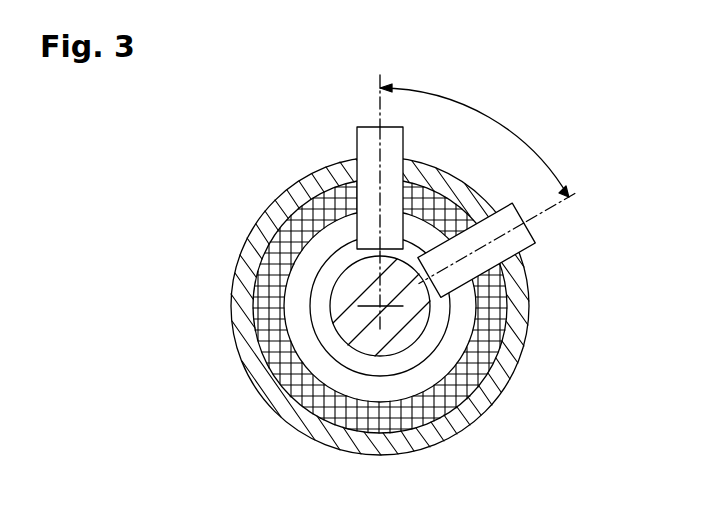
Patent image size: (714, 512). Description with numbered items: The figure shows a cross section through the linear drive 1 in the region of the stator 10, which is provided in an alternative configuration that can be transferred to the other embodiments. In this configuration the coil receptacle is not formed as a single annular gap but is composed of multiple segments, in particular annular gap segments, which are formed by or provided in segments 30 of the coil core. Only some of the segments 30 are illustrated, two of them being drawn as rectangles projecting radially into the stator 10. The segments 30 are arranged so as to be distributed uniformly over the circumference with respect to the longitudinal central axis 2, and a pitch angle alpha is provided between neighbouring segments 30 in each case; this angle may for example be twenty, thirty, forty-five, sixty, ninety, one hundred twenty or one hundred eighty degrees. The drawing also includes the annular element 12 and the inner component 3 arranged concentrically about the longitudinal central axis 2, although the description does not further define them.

The linear drive 1 is at (578, 113).
The longitudinal central axis 2 is at (382, 310).
The magnet 3 is at (367, 335).
The stator 10 is at (279, 158).
The flux-conducting ring 12 is at (488, 310).
The segments 30 is at (372, 143).